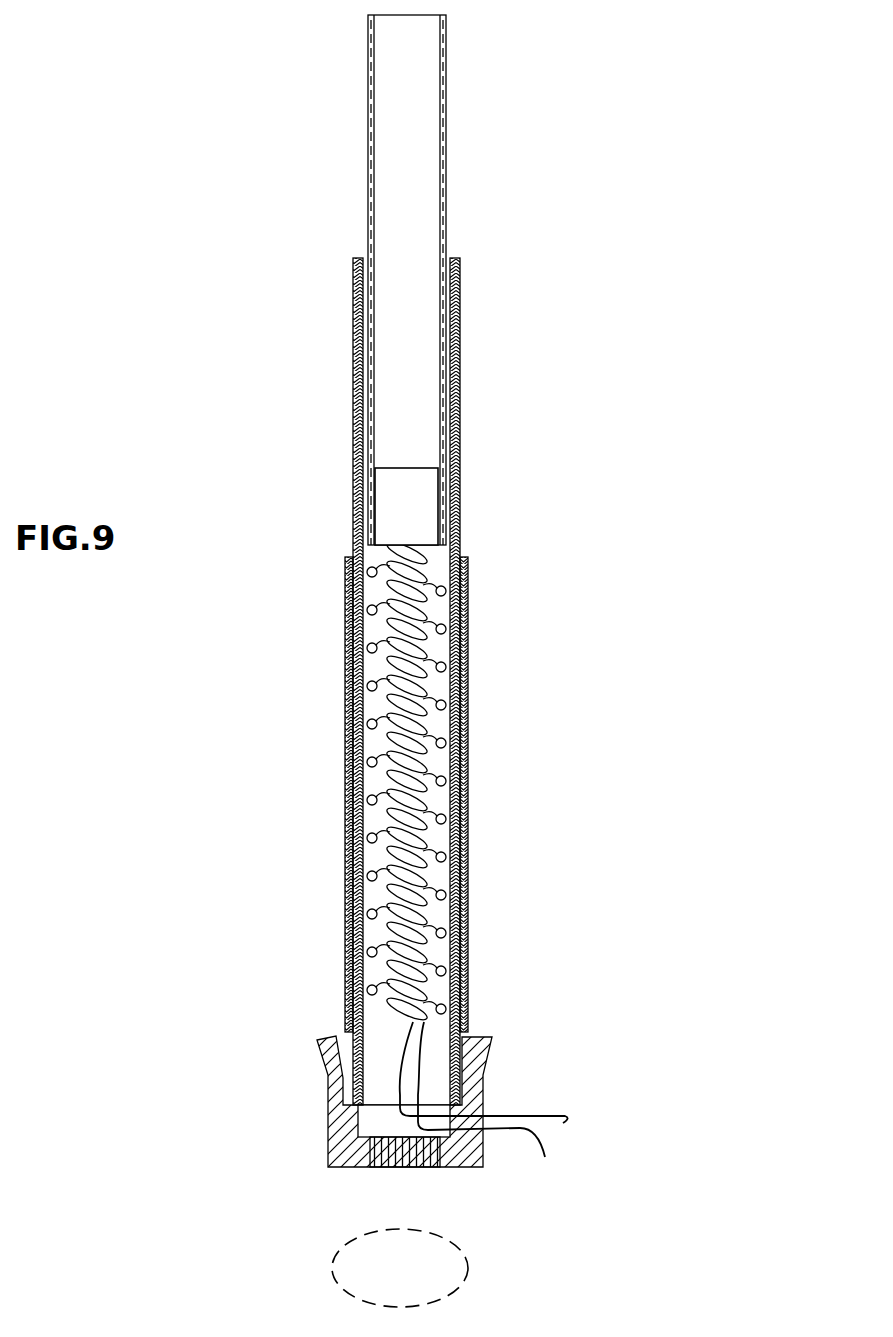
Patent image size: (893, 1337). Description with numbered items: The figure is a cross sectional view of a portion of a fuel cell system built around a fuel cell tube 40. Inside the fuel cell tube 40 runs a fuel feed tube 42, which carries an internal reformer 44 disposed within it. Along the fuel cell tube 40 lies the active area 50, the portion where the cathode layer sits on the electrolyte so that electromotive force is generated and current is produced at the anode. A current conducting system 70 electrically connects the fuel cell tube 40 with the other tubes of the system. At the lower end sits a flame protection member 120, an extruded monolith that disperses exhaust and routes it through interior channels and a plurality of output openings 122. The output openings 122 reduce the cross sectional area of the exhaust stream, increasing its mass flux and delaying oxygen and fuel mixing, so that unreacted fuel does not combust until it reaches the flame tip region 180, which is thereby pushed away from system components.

The fuel feed tube 42 is at (447, 130).
The fuel cell tube 40 is at (445, 308).
The internal reformer 44 is at (427, 503).
The active area 50 is at (340, 548).
The flame protection member 120 is at (500, 1032).
The output openings 122 is at (440, 1170).
The current conducting system 70 is at (556, 1143).
The flame tip region 180 is at (400, 1268).